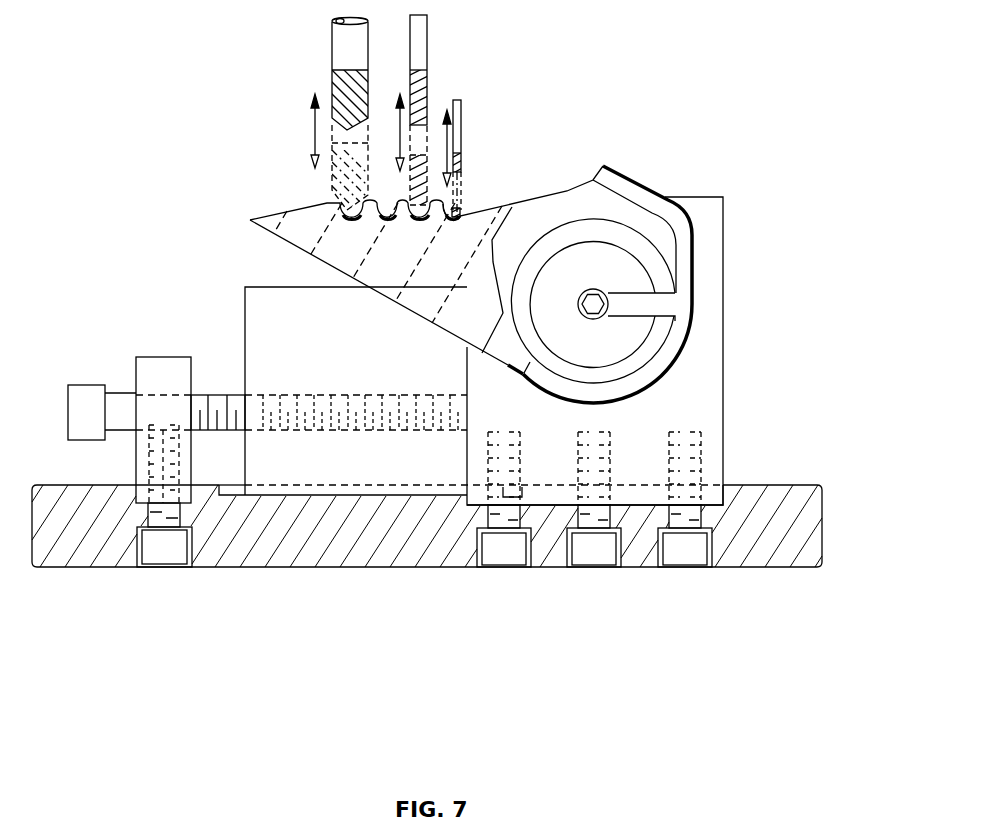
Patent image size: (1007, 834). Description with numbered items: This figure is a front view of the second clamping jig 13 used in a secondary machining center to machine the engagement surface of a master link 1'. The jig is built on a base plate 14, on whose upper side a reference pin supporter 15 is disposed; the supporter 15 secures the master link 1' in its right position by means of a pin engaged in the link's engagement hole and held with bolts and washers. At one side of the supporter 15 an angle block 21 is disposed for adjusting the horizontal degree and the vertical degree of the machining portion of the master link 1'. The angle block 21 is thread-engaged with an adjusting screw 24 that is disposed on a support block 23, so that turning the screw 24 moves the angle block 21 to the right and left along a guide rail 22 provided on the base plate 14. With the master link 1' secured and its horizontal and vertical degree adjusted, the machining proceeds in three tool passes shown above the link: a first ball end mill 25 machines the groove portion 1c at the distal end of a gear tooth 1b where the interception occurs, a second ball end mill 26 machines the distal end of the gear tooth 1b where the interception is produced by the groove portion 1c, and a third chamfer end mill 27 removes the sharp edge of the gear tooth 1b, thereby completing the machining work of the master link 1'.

The master link 1' is at (470, 229).
The gear tooth 1b is at (457, 203).
The groove portion 1c is at (460, 217).
The second clamping jig 13 is at (631, 325).
The base plate 14 is at (772, 548).
The reference pin supporter 15 is at (707, 388).
The angle block 21 is at (260, 307).
The guide rail 22 is at (233, 490).
The support block 23 is at (160, 375).
The adjusting screw 24 is at (115, 400).
The first ball end mill 25 is at (461, 108).
The second ball end mill 26 is at (420, 38).
The third chamfer end mill 27 is at (343, 43).